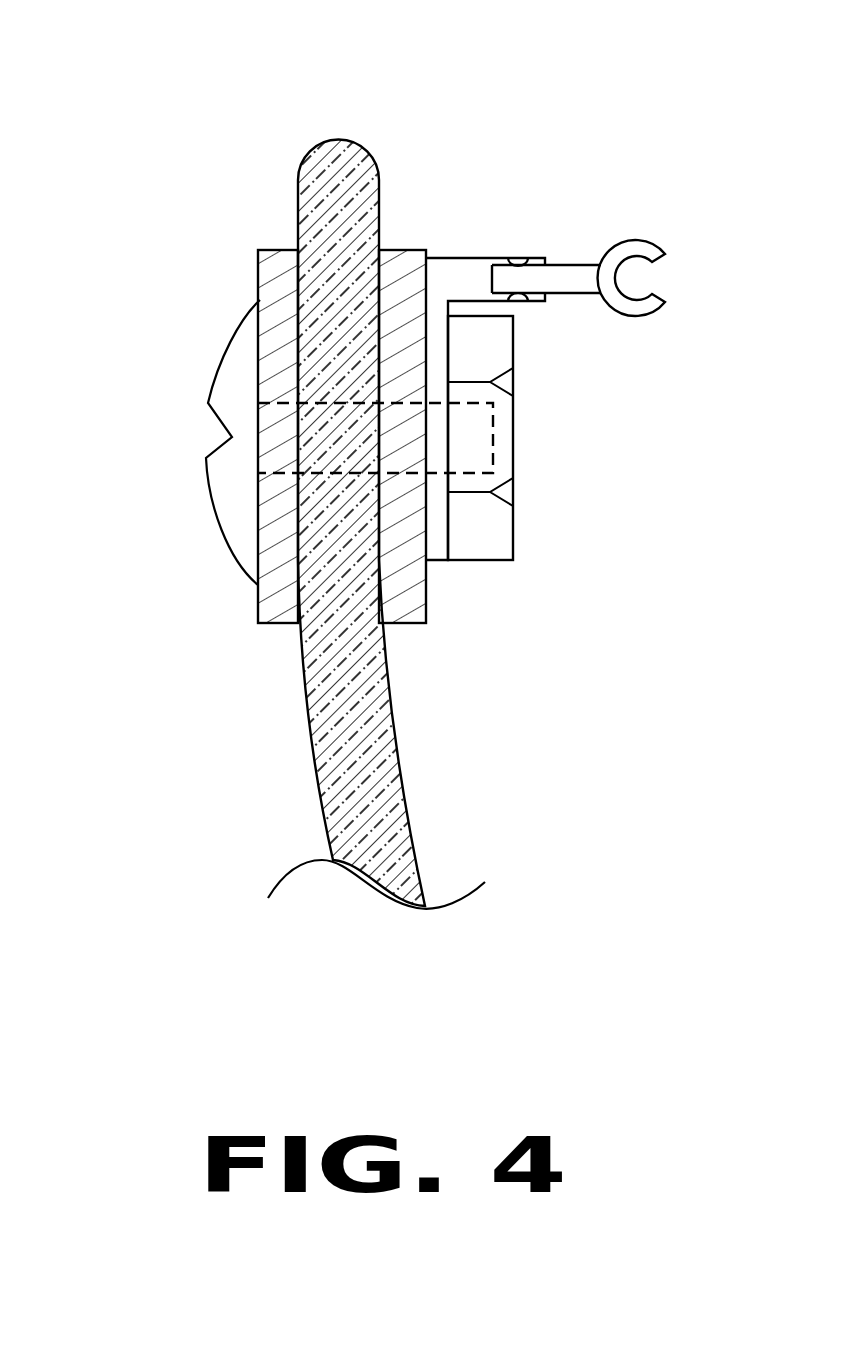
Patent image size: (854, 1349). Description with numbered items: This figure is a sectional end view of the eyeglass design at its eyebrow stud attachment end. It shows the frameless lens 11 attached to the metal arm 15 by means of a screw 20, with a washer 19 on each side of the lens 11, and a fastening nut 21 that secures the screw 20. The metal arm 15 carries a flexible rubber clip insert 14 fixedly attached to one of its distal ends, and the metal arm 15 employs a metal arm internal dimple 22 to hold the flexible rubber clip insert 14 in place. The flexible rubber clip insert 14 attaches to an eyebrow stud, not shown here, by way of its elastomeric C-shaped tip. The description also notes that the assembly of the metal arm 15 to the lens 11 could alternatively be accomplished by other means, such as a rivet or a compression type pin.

The frameless lens 11 is at (303, 155).
The flexible rubber clip insert 14 is at (663, 247).
The metal arm 15 is at (454, 258).
The washer 19 is at (255, 277).
The screw 20 is at (208, 403).
The fastening nut 21 is at (513, 412).
The metal arm internal dimple 22 is at (520, 302).